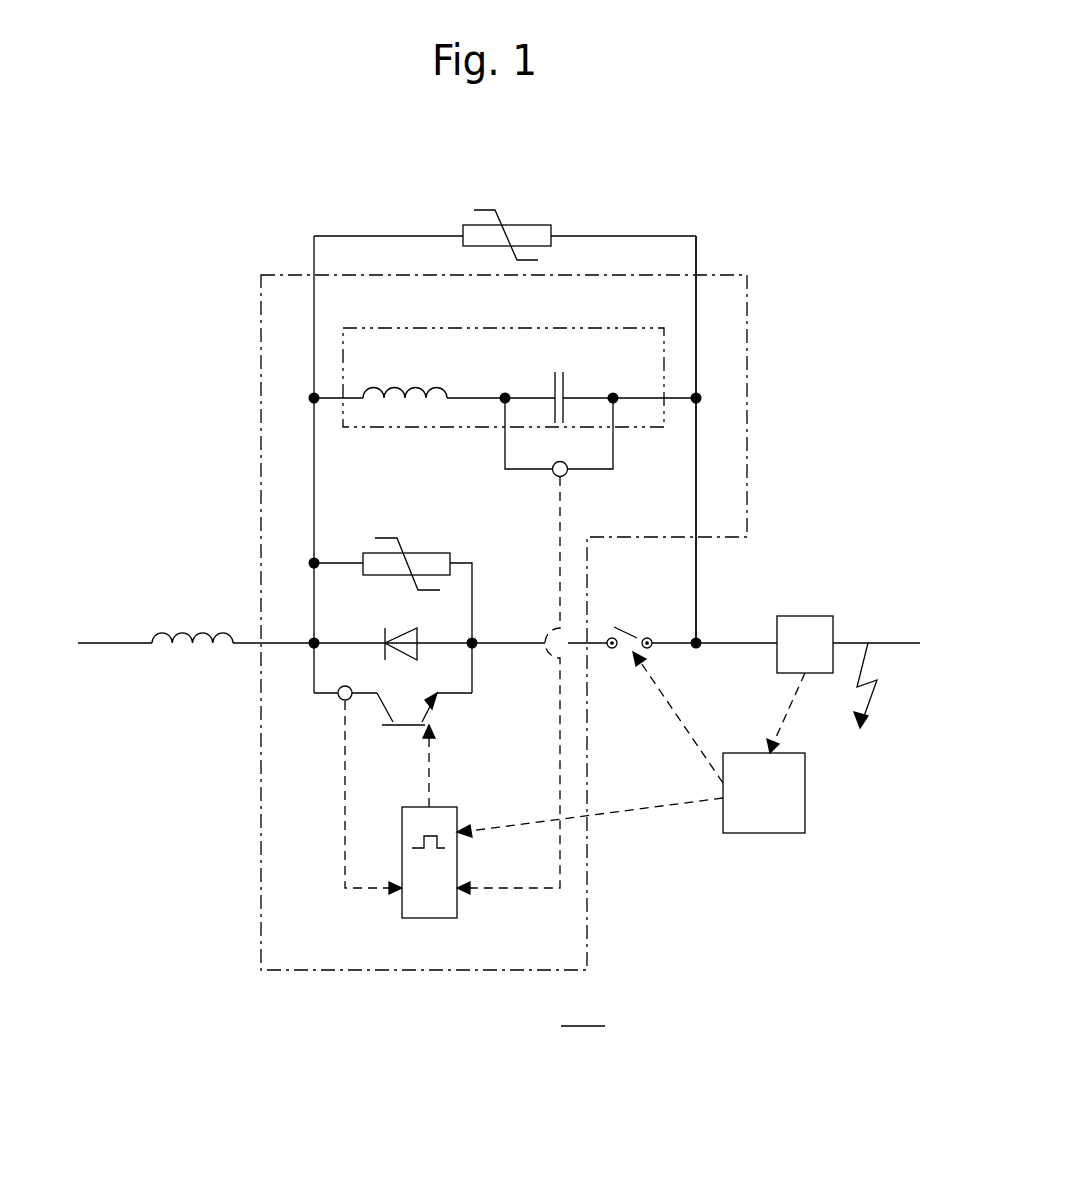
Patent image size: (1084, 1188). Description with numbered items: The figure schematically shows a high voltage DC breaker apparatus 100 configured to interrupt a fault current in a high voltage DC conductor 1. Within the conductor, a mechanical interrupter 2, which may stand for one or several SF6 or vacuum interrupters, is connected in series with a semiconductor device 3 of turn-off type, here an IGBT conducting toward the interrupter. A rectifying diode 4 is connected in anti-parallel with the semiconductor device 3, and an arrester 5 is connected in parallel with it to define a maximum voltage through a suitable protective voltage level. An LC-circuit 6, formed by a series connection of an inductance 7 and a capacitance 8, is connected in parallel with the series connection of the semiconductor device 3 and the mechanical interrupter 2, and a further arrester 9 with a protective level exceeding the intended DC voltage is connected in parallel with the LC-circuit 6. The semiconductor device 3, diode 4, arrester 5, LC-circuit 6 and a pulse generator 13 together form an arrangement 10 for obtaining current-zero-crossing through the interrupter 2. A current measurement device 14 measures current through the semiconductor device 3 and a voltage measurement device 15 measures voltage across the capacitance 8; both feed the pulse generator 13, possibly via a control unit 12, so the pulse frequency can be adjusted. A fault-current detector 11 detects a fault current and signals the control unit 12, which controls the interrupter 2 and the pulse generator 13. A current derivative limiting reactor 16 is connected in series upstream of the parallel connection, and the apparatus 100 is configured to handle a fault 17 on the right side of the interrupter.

The high voltage DC conductor 1 is at (735, 640).
The mechanical interrupter 2 is at (628, 634).
The semiconductor device 3 is at (410, 727).
The rectifying diode 4 is at (395, 632).
The arrester 5 is at (433, 553).
The LC-circuit 6 is at (357, 330).
The inductance 7 is at (418, 387).
The capacitance 8 is at (553, 378).
The further arrester 9 is at (538, 224).
The arrangement for obtaining current-zero-crossing 10 is at (590, 935).
The fault-current detector 11 is at (805, 616).
The control unit 12 is at (805, 805).
The pulse generator 13 is at (457, 905).
The current measurement device 14 is at (340, 700).
The voltage measurement device 15 is at (555, 478).
The current derivative limiting reactor 16 is at (195, 632).
The fault 17 is at (877, 690).
The high voltage DC breaker apparatus 100 is at (583, 1013).